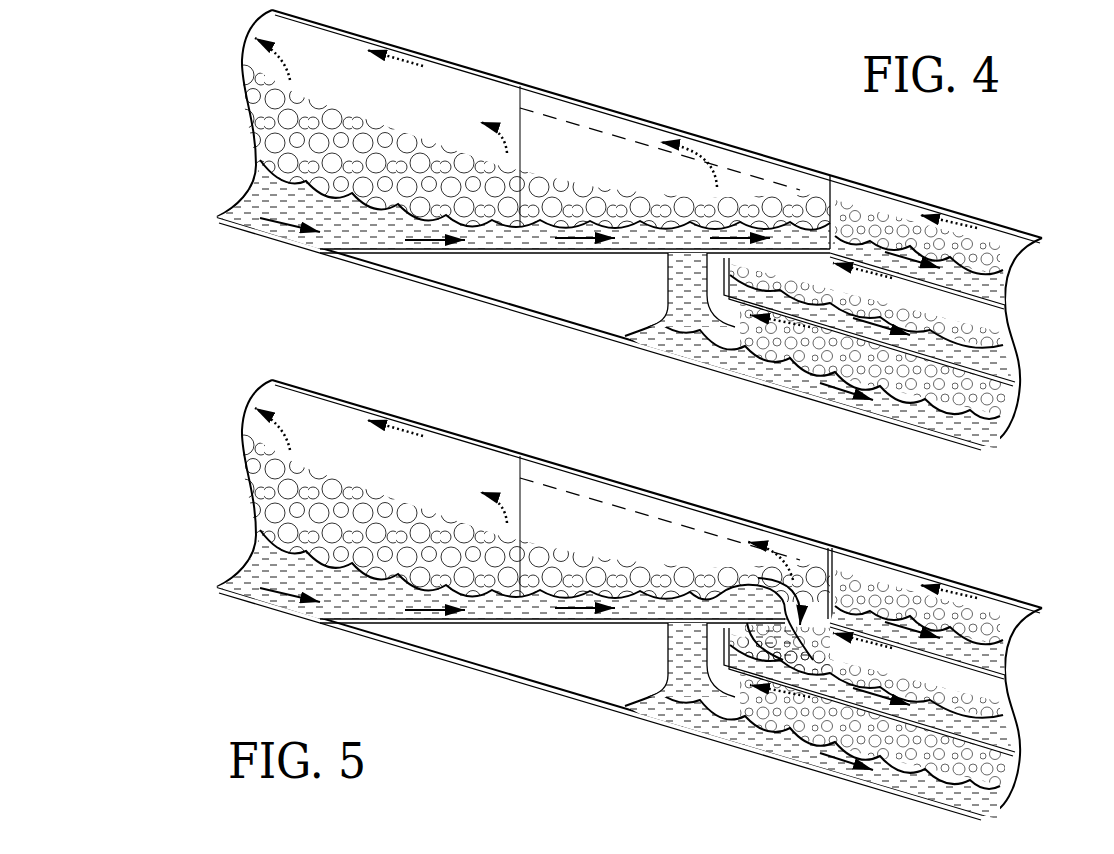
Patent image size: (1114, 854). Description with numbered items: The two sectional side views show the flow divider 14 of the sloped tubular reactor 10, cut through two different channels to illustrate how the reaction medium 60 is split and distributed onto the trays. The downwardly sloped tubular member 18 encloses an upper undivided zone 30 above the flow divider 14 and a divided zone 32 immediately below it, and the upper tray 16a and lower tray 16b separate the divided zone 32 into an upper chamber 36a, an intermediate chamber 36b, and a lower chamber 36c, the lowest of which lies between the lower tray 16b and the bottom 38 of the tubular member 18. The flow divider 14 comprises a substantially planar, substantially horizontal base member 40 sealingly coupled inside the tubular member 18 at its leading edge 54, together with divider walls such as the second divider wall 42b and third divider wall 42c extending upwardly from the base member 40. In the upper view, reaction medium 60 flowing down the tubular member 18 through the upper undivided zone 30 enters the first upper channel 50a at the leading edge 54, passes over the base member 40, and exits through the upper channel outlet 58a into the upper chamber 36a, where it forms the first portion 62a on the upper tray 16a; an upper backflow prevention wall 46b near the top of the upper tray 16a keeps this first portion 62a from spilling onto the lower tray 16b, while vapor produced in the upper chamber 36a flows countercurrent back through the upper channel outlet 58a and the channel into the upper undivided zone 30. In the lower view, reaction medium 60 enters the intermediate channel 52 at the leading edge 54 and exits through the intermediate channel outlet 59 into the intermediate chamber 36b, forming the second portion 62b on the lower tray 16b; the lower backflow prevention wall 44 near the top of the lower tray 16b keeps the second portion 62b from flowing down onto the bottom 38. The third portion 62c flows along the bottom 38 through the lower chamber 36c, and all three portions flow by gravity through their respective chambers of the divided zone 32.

In FIG. 4, the sloped tubular reactor 10 is at (735, 107).
In FIG. 4, the flow divider 14 is at (576, 104).
In FIG. 5, the flow divider 14 is at (629, 597).
In FIG. 4, the upper tray 16a is at (957, 291).
In FIG. 5, the upper tray 16a is at (911, 726).
In FIG. 4, the lower tray 16b is at (843, 328).
In FIG. 5, the lower tray 16b is at (869, 717).
In FIG. 4, the tubular member 18 is at (505, 85).
In FIG. 5, the tubular member 18 is at (531, 513).
In FIG. 4, the upper undivided zone 30 is at (418, 108).
In FIG. 5, the upper undivided zone 30 is at (381, 456).
In FIG. 4, the divided zone 32 is at (926, 210).
In FIG. 5, the divided zone 32 is at (945, 552).
In FIG. 4, the upper chamber 36a is at (1002, 248).
In FIG. 5, the upper chamber 36a is at (962, 609).
In FIG. 4, the intermediate chamber 36b is at (995, 320).
In FIG. 5, the intermediate chamber 36b is at (906, 673).
In FIG. 4, the lower chamber 36c is at (995, 395).
In FIG. 5, the lower chamber 36c is at (914, 734).
In FIG. 4, the bottom of tubular member 38 is at (740, 368).
In FIG. 5, the bottom of tubular member 38 is at (704, 705).
In FIG. 4, the base member 40 is at (570, 252).
In FIG. 5, the base member 40 is at (600, 703).
In FIG. 4, the second divider wall 42b is at (622, 168).
In FIG. 5, the third divider wall 42c is at (660, 515).
In FIG. 5, the lower backflow prevention wall 44 is at (676, 710).
In FIG. 5, the upper backflow prevention wall 46b is at (867, 564).
In FIG. 4, the first upper channel 50a is at (700, 240).
In FIG. 5, the intermediate channel 52 is at (523, 546).
In FIG. 4, the leading edge 54 is at (325, 249).
In FIG. 5, the leading edge 54 is at (528, 639).
In FIG. 4, the upper channel outlet 58a is at (838, 232).
In FIG. 5, the intermediate channel outlet 59 is at (817, 549).
In FIG. 4, the reaction medium 60 is at (280, 163).
In FIG. 5, the reaction medium 60 is at (235, 585).
In FIG. 4, the first portion of reaction medium 62a is at (985, 285).
In FIG. 5, the first portion of reaction medium 62a is at (951, 645).
In FIG. 4, the second portion of reaction medium 62b is at (995, 358).
In FIG. 5, the second portion of reaction medium 62b is at (908, 702).
In FIG. 4, the third portion of reaction medium 62c is at (985, 430).
In FIG. 5, the third portion of reaction medium 62c is at (850, 762).